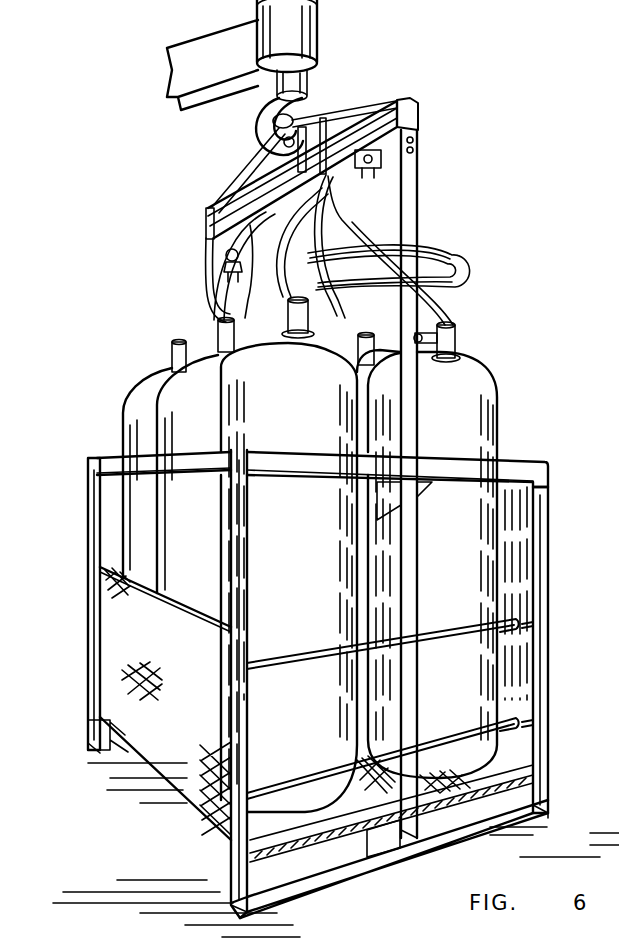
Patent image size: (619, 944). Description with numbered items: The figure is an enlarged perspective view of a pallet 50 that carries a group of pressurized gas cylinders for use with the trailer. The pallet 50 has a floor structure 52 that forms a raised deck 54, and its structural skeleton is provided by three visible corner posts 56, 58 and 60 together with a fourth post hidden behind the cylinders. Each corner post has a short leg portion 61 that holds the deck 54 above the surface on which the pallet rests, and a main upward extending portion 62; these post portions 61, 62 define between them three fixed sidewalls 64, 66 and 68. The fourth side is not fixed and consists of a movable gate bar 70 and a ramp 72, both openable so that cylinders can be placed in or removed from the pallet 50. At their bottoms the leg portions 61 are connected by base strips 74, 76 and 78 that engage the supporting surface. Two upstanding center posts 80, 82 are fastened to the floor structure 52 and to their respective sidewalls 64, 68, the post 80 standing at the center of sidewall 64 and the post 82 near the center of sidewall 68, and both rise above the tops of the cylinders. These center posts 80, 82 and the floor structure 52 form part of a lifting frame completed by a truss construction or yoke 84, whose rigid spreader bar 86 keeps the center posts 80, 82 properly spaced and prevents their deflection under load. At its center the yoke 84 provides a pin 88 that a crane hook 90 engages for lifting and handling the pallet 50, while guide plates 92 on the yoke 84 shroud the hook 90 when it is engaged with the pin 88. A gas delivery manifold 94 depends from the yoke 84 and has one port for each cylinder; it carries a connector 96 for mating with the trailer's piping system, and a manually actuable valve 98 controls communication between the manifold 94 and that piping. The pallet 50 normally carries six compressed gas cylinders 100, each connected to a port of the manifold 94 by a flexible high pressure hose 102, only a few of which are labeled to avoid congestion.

The pallet 50 is at (503, 340).
The floor structure 52 is at (532, 844).
The raised deck 54 is at (305, 905).
The corner post 56 is at (90, 640).
The corner post 58 is at (250, 627).
The corner post 60 is at (542, 552).
The short leg portion 61 is at (100, 725).
The main upward extending portion 62 is at (90, 575).
The fixed sidewall 64 is at (108, 502).
The fixed sidewall 66 is at (520, 609).
The fixed sidewall 68 is at (434, 696).
The movable gate bar 70 is at (115, 462).
The ramp 72 is at (182, 790).
The base strip 74 is at (115, 762).
The base strip 76 is at (530, 790).
The base strip 78 is at (462, 838).
The center post 80 is at (212, 247).
The center post 82 is at (412, 230).
The yoke 84 is at (425, 104).
The spreader bar 86 is at (366, 130).
The pin 88 is at (284, 140).
The crane hook 90 is at (262, 124).
The guide plates 92 is at (330, 122).
The gas delivery manifold 94 is at (345, 178).
The connector 96 is at (224, 262).
The manually actuable valve 98 is at (246, 280).
The compressed gas cylinder 100 is at (240, 388).
The flexible high pressure hose 102 is at (210, 305).